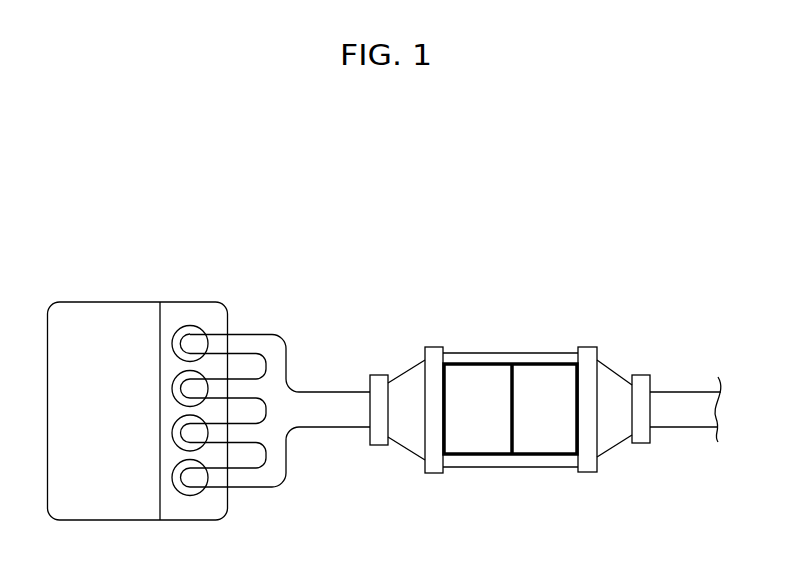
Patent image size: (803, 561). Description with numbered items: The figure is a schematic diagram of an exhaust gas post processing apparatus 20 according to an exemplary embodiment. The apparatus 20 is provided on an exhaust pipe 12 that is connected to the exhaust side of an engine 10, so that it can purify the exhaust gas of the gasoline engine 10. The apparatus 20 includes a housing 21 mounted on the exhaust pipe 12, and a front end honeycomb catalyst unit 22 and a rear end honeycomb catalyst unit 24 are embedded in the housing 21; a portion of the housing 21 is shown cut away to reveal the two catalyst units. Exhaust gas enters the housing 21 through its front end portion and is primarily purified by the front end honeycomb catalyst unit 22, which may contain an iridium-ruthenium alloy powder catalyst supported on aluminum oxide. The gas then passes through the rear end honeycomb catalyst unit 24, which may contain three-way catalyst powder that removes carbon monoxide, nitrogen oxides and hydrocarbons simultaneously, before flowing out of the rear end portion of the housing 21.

The engine 10 is at (104, 302).
The exhaust pipe 12 is at (322, 391).
The exhaust gas post processing apparatus 20 is at (631, 334).
The housing 21 is at (401, 372).
The front end honeycomb catalyst unit 22 is at (475, 363).
The rear end honeycomb catalyst unit 24 is at (543, 363).